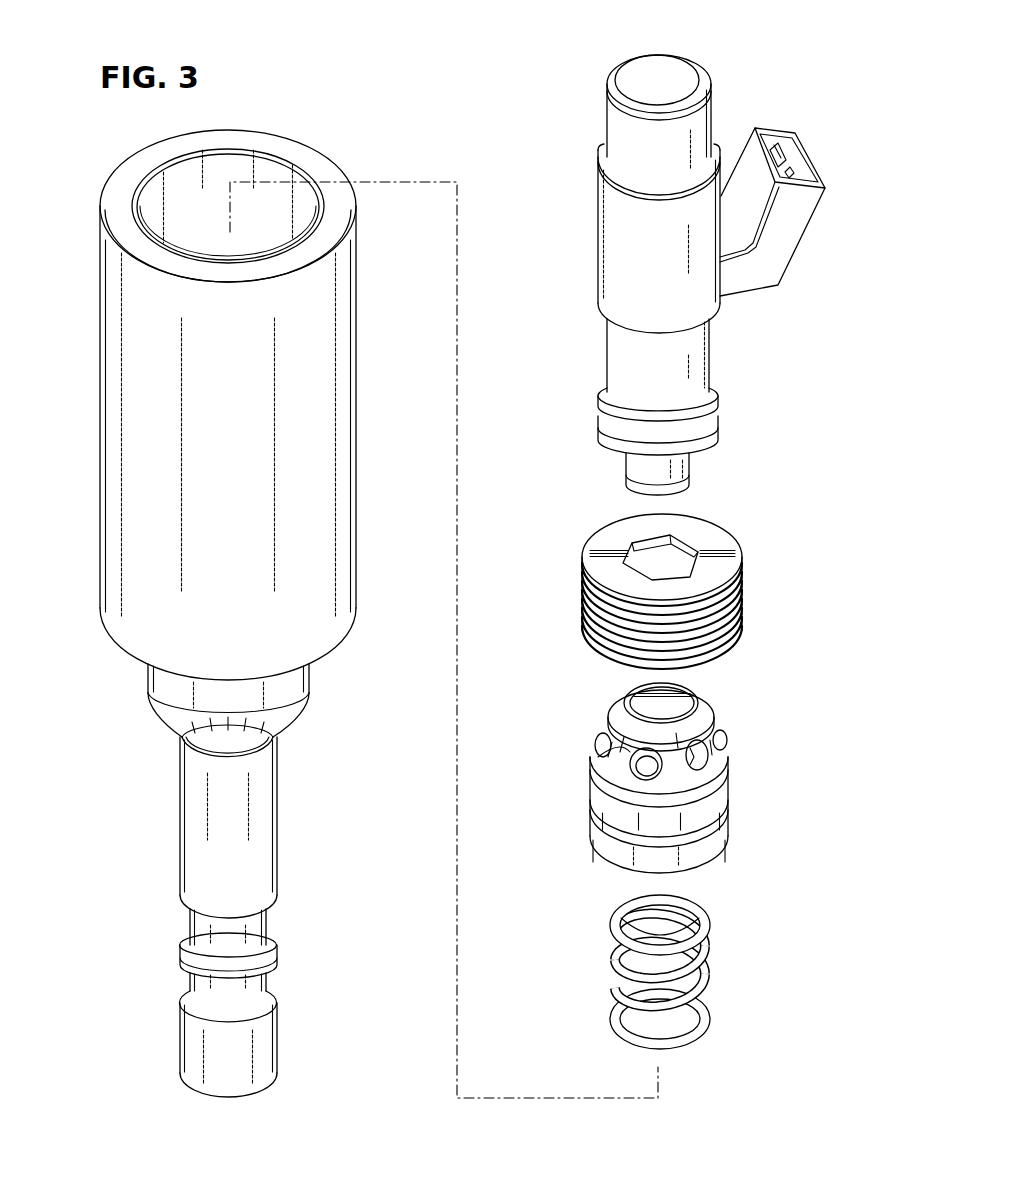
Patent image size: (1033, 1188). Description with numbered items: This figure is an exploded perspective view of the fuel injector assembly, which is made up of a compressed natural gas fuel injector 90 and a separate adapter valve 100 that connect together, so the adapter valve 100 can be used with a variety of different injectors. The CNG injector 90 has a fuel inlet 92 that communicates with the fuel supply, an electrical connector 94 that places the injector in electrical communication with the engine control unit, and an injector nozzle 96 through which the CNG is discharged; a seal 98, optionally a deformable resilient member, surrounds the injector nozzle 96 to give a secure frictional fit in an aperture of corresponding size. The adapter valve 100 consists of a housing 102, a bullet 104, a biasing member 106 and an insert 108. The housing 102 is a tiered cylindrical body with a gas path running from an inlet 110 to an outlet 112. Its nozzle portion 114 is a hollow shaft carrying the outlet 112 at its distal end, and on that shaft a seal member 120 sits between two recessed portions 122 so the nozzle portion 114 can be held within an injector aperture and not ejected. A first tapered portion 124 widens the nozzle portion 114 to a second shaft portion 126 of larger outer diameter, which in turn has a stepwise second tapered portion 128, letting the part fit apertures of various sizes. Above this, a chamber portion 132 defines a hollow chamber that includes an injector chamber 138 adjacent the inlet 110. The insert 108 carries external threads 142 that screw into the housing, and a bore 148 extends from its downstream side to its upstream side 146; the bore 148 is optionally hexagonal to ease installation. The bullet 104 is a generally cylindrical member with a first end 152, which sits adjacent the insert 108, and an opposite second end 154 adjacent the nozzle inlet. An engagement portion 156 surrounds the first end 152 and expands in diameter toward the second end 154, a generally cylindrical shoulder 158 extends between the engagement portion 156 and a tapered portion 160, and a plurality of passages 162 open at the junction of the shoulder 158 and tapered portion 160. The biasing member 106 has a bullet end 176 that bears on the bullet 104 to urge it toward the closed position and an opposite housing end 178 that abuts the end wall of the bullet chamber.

The compressed natural gas fuel injector 90 is at (754, 104).
The fuel inlet 92 is at (657, 78).
The electrical connector 94 is at (790, 160).
The injector nozzle 96 is at (690, 470).
The seal 98 is at (713, 385).
The adapter valve 100 is at (506, 233).
The housing 102 is at (126, 688).
The bullet 104 is at (757, 800).
The biasing member 106 is at (714, 997).
The insert 108 is at (770, 597).
The inlet 110 is at (157, 217).
The outlet 112 is at (248, 1100).
The nozzle portion 114 is at (160, 852).
The seal member 120 is at (277, 952).
The recessed portions 122 is at (268, 920).
The first tapered portion 124 is at (283, 730).
The second shaft portion 126 is at (310, 677).
The second tapered portion 128 is at (328, 650).
The chamber portion 132 is at (90, 415).
The injector chamber 138 is at (268, 205).
The external threads 142 is at (742, 618).
The upstream side 146 is at (607, 550).
The bore 148 is at (685, 545).
The first end 152 is at (677, 708).
The second end 154 is at (718, 848).
The engagement portion 156 is at (613, 710).
The shoulder 158 is at (631, 752).
The tapered portion 160 is at (676, 778).
The passages 162 is at (598, 745).
The bullet end 176 is at (702, 925).
The housing end 178 is at (675, 1050).